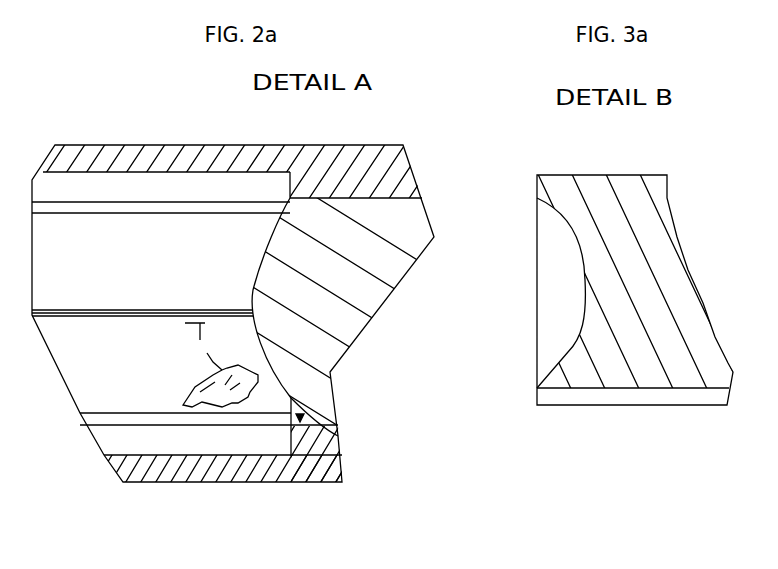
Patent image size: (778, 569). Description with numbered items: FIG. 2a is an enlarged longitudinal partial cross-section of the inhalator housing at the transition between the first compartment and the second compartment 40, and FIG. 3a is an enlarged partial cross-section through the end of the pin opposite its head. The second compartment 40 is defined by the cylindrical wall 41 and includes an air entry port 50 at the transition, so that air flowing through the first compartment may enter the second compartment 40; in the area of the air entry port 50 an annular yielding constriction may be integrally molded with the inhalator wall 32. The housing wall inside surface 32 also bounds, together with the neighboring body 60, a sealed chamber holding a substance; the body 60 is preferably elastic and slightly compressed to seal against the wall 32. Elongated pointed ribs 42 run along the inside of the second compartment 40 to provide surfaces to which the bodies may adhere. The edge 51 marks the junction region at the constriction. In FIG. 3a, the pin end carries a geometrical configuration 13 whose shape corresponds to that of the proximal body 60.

In FIG. 3a, the geometrical configuration 13 is at (573, 350).
In FIG. 2a, the housing wall inside surface 32 is at (403, 147).
In FIG. 2a, the second compartment 40 is at (145, 373).
In FIG. 2a, the cylindrical wall 41 is at (51, 277).
In FIG. 2a, the elongated pointed ribs 42 is at (128, 312).
In FIG. 2a, the air entry port 50 is at (333, 428).
In FIG. 2a, the edge 51 is at (290, 200).
In FIG. 2a, the body 60 is at (332, 269).